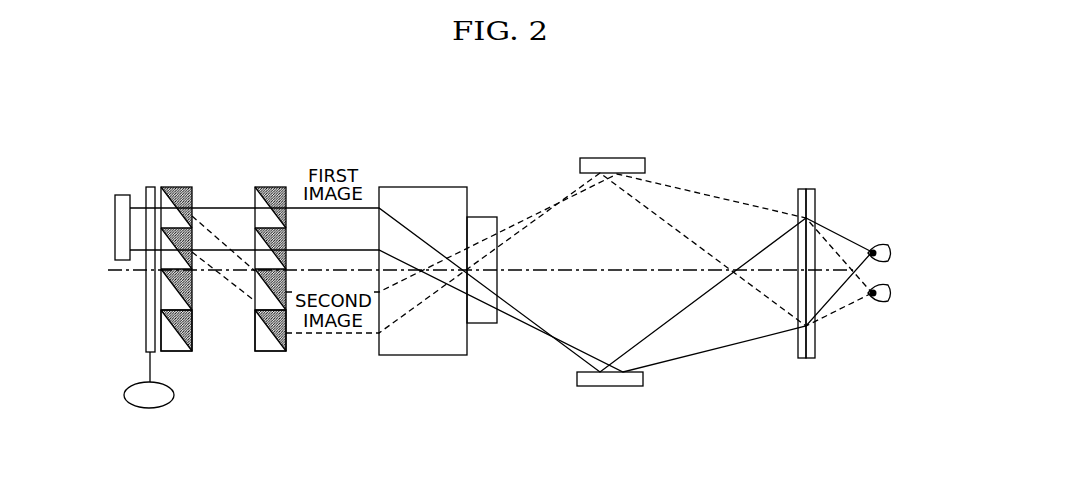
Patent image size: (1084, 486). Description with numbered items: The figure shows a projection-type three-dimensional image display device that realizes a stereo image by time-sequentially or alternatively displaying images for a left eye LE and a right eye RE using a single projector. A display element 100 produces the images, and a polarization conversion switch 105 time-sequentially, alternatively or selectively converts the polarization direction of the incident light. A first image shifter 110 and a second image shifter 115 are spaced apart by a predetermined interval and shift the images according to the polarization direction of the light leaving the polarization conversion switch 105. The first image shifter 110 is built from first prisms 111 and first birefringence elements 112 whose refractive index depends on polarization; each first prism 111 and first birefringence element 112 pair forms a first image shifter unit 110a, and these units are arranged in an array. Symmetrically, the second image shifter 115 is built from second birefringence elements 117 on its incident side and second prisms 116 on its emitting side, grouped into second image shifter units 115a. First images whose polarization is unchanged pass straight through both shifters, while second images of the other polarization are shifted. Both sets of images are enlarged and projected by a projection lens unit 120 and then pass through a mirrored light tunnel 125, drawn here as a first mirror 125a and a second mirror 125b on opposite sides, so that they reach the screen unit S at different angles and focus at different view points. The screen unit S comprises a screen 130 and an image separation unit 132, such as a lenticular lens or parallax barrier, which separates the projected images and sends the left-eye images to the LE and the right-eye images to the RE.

The display element 100 is at (122, 194).
The polarization conversion switch 105 is at (150, 186).
The first image shifter 110 is at (206, 277).
The first prism 111 is at (172, 347).
The first birefringence element 112 is at (185, 327).
The first image shifter unit 110a is at (242, 360).
The second image shifter 115 is at (296, 287).
The second prism 116 is at (271, 348).
The second birefringence element 117 is at (284, 345).
The second image shifter unit 115a is at (337, 397).
The projection lens unit 120 is at (425, 186).
The mirrored light tunnel 125 is at (573, 275).
The first mirror 125a is at (612, 157).
The second mirror 125b is at (612, 387).
The screen 130 is at (798, 354).
The image separation unit 132 is at (815, 354).
The screen unit S is at (807, 267).
The right eye RE is at (879, 238).
The left eye LE is at (880, 306).